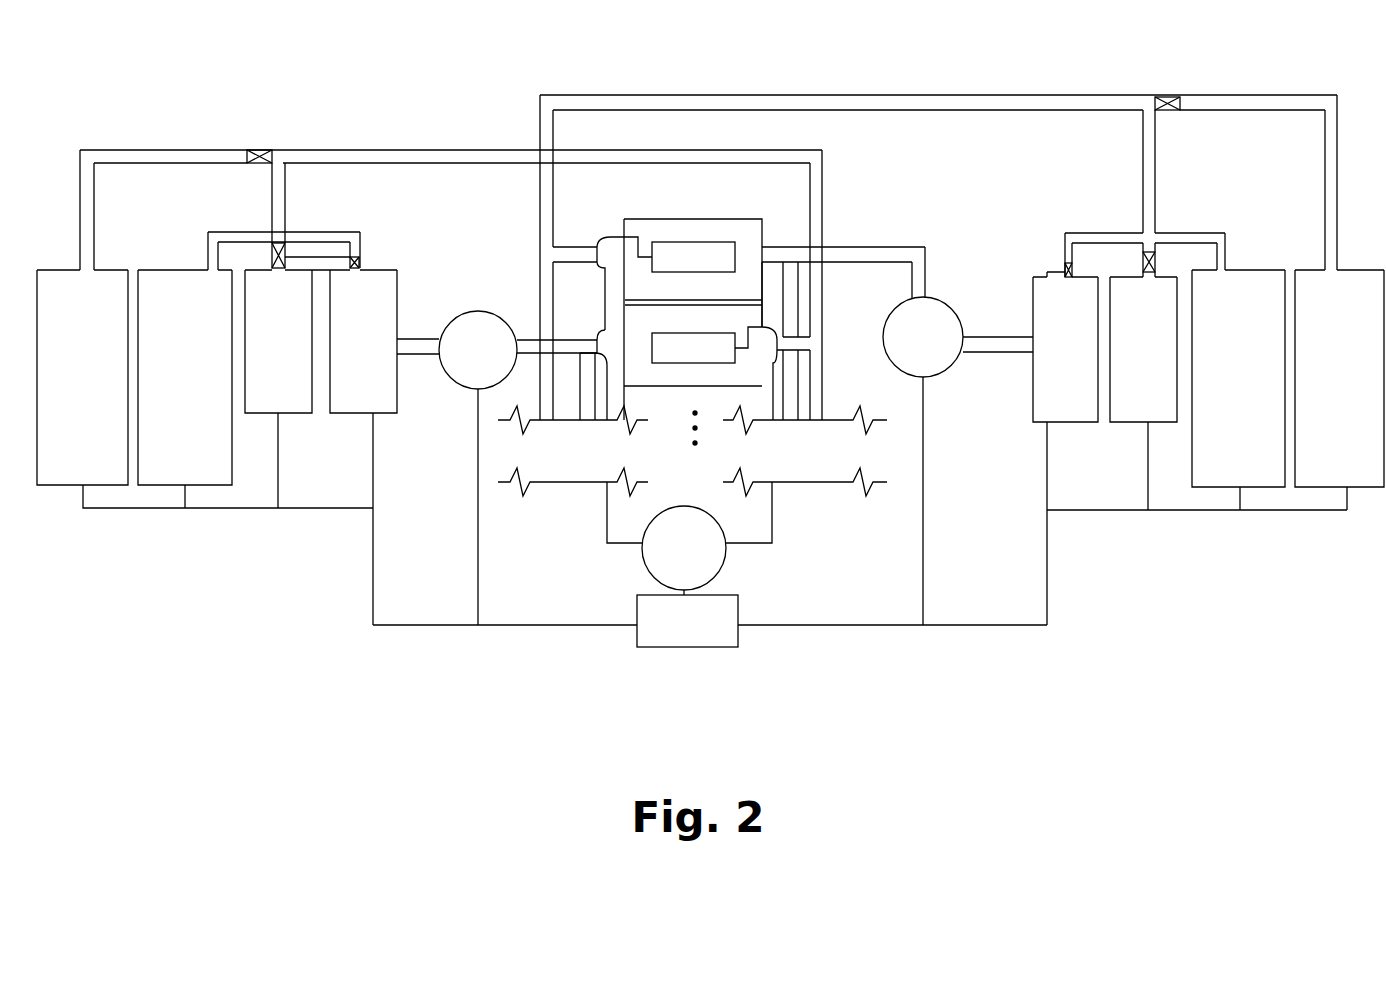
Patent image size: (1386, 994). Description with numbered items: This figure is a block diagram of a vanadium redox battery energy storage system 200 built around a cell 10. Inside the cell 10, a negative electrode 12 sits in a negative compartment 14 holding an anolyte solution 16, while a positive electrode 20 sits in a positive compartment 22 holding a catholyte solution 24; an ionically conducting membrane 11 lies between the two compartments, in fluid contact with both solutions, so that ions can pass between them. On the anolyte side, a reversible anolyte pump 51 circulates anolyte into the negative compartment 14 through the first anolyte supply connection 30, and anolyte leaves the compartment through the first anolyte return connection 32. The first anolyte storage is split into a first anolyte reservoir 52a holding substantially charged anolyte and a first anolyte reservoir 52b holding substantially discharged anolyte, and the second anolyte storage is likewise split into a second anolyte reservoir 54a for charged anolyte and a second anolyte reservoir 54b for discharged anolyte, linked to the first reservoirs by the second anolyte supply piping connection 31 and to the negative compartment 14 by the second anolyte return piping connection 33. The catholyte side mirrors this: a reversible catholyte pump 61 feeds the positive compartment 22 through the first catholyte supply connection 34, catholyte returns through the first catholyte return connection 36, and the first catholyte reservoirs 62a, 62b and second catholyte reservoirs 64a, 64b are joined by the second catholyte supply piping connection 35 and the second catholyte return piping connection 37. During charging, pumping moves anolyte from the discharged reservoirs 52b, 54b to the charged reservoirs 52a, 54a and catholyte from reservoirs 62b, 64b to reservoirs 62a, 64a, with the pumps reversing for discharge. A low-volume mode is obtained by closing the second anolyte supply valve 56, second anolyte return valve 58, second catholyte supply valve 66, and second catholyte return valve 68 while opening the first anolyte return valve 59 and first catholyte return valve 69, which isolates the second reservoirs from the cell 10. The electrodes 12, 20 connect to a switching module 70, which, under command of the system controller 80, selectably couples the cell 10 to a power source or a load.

The vanadium redox battery energy storage system 200 is at (407, 79).
The cell 10 is at (668, 218).
The ionically conducting membrane 11 is at (762, 302).
The negative electrode 12 is at (707, 345).
The negative compartment 14 is at (773, 373).
The anolyte solution 16 is at (615, 375).
The positive electrode 20 is at (679, 254).
The positive compartment 22 is at (765, 299).
The catholyte solution 24 is at (625, 283).
The first anolyte supply connection 30 is at (413, 339).
The second anolyte supply piping connection 31 is at (250, 232).
The first anolyte return connection 32 is at (478, 150).
The second anolyte return piping connection 33 is at (140, 150).
The first catholyte supply connection 34 is at (988, 337).
The second catholyte supply piping connection 35 is at (1090, 233).
The first catholyte return connection 36 is at (905, 95).
The second catholyte return piping connection 37 is at (1278, 95).
The reversible anolyte pump 51 is at (518, 468).
The first anolyte reservoir 52a is at (363, 447).
The first anolyte reservoir 52b is at (278, 389).
The second anolyte reservoir 54a is at (185, 389).
The second anolyte reservoir 54b is at (205, 389).
The second anolyte supply valve 56 is at (360, 262).
The second anolyte return valve 58 is at (258, 150).
The first anolyte return valve 59 is at (286, 257).
The reversible catholyte pump 61 is at (923, 461).
The first catholyte reservoir 62a is at (1190, 451).
The first catholyte reservoir 62b is at (1143, 393).
The second catholyte reservoir 64a is at (1238, 390).
The second catholyte reservoir 64b is at (1339, 390).
The second catholyte supply valve 66 is at (1063, 265).
The second catholyte return valve 68 is at (1168, 112).
The first catholyte return valve 69 is at (1157, 262).
The switching module 70 is at (689, 538).
The system controller 80 is at (710, 621).